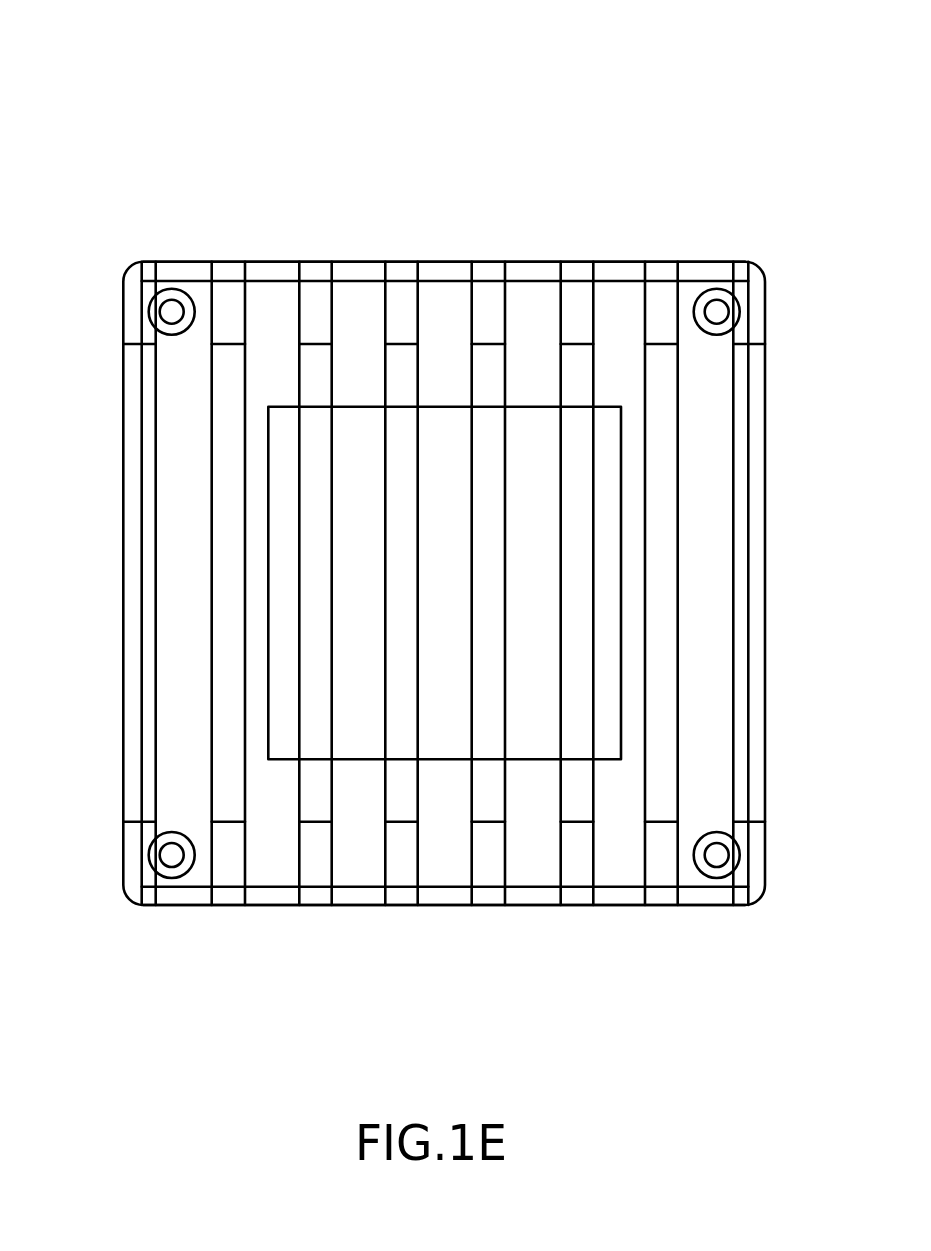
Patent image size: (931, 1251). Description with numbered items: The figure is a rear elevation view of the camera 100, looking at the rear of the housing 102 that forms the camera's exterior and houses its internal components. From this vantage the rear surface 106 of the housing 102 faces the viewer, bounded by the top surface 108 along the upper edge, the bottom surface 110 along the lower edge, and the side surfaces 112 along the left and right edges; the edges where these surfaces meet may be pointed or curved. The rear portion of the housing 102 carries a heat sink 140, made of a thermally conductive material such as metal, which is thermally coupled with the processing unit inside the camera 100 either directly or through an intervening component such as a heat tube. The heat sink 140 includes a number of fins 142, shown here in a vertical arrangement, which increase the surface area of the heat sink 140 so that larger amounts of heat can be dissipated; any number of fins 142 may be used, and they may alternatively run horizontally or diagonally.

The camera 100 is at (183, 77).
The housing 102 is at (544, 969).
The rear surface 106 is at (147, 642).
The top surface 108 is at (531, 263).
The bottom surface 110 is at (275, 905).
The side surfaces 112 is at (123, 452).
The heat sink 140 is at (361, 231).
The fins 142 is at (489, 296).